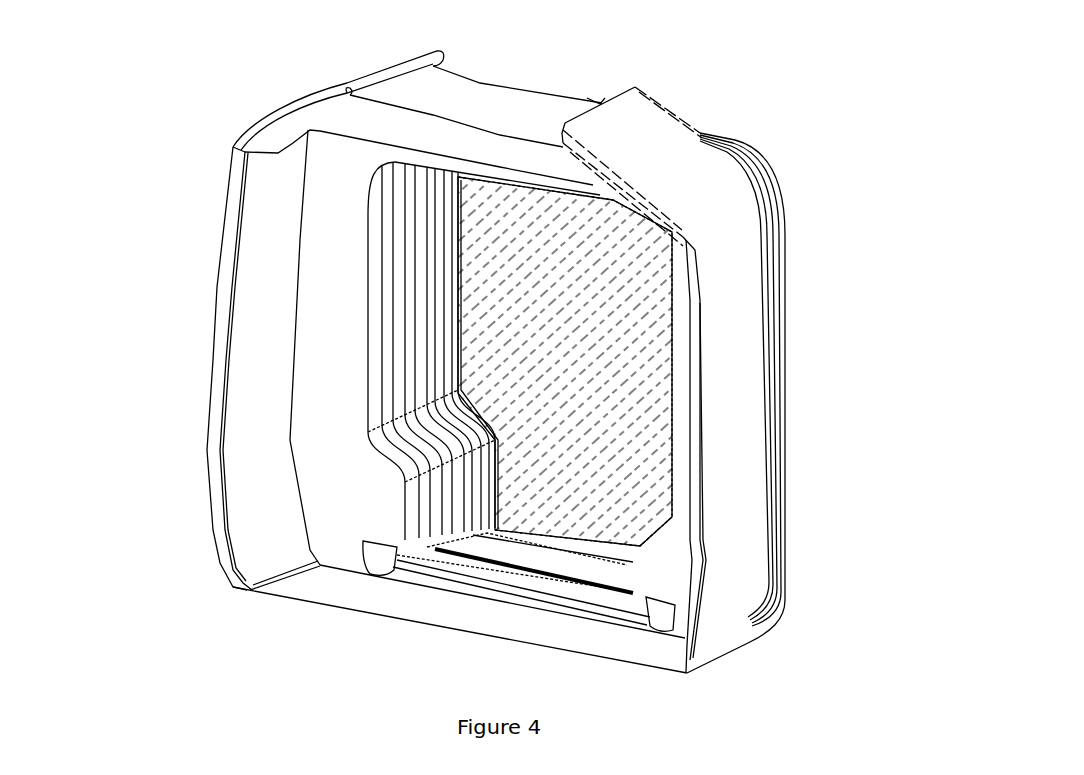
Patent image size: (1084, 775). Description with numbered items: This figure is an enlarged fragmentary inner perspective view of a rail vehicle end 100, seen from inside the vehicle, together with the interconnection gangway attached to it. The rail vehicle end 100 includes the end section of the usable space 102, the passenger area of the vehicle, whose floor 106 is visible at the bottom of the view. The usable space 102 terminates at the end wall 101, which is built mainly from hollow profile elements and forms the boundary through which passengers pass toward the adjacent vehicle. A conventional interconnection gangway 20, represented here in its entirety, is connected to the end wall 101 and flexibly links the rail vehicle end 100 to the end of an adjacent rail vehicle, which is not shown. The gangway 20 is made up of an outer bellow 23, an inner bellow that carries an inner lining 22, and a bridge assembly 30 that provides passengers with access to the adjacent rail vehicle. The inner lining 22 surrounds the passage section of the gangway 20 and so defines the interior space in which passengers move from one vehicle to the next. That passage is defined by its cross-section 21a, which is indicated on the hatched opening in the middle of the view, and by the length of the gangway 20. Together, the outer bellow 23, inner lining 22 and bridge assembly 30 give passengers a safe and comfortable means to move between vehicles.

The rail vehicle end 100 is at (193, 117).
The end wall 101 is at (333, 267).
The usable space 102 is at (253, 498).
The floor 106 is at (320, 583).
The gangway 20 is at (785, 162).
The cross-section 21a is at (602, 352).
The inner lining 22 is at (485, 468).
The outer bellow 23 is at (783, 273).
The bridge assembly 30 is at (600, 568).